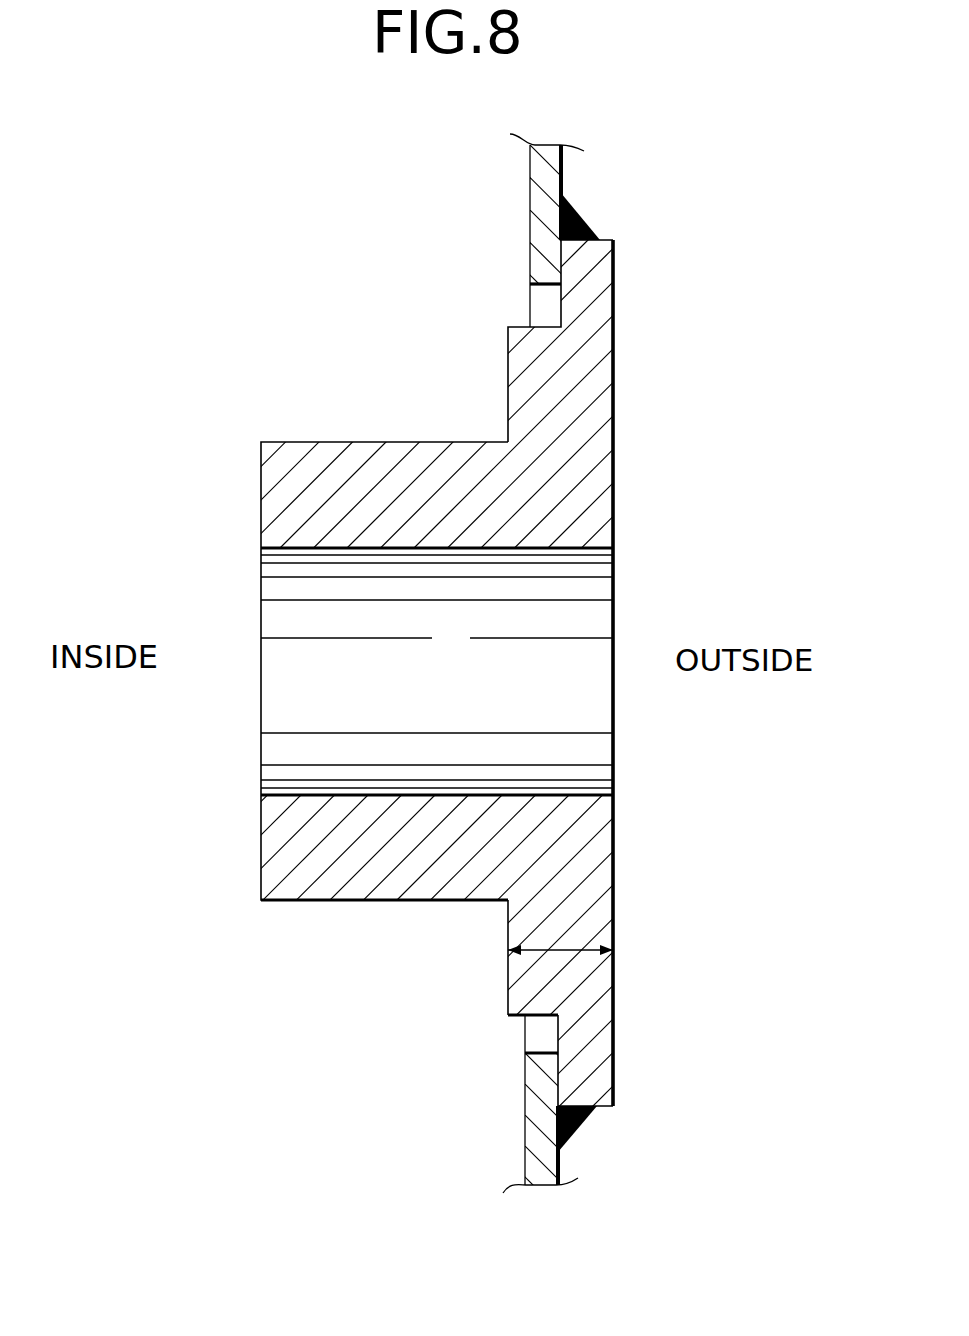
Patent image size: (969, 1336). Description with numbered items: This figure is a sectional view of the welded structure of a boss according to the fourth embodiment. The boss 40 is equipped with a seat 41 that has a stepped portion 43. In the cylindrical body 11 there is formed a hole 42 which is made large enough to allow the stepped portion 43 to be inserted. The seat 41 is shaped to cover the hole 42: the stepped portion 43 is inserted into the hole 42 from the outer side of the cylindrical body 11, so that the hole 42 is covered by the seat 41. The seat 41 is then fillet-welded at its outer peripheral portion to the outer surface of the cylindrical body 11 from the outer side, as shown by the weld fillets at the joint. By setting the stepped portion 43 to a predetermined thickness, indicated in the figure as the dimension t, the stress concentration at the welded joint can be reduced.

The cylindrical body 11 is at (543, 184).
The boss 40 is at (366, 461).
The seat 41 is at (595, 1053).
The hole 42 is at (548, 292).
The stepped portion 43 is at (513, 1017).